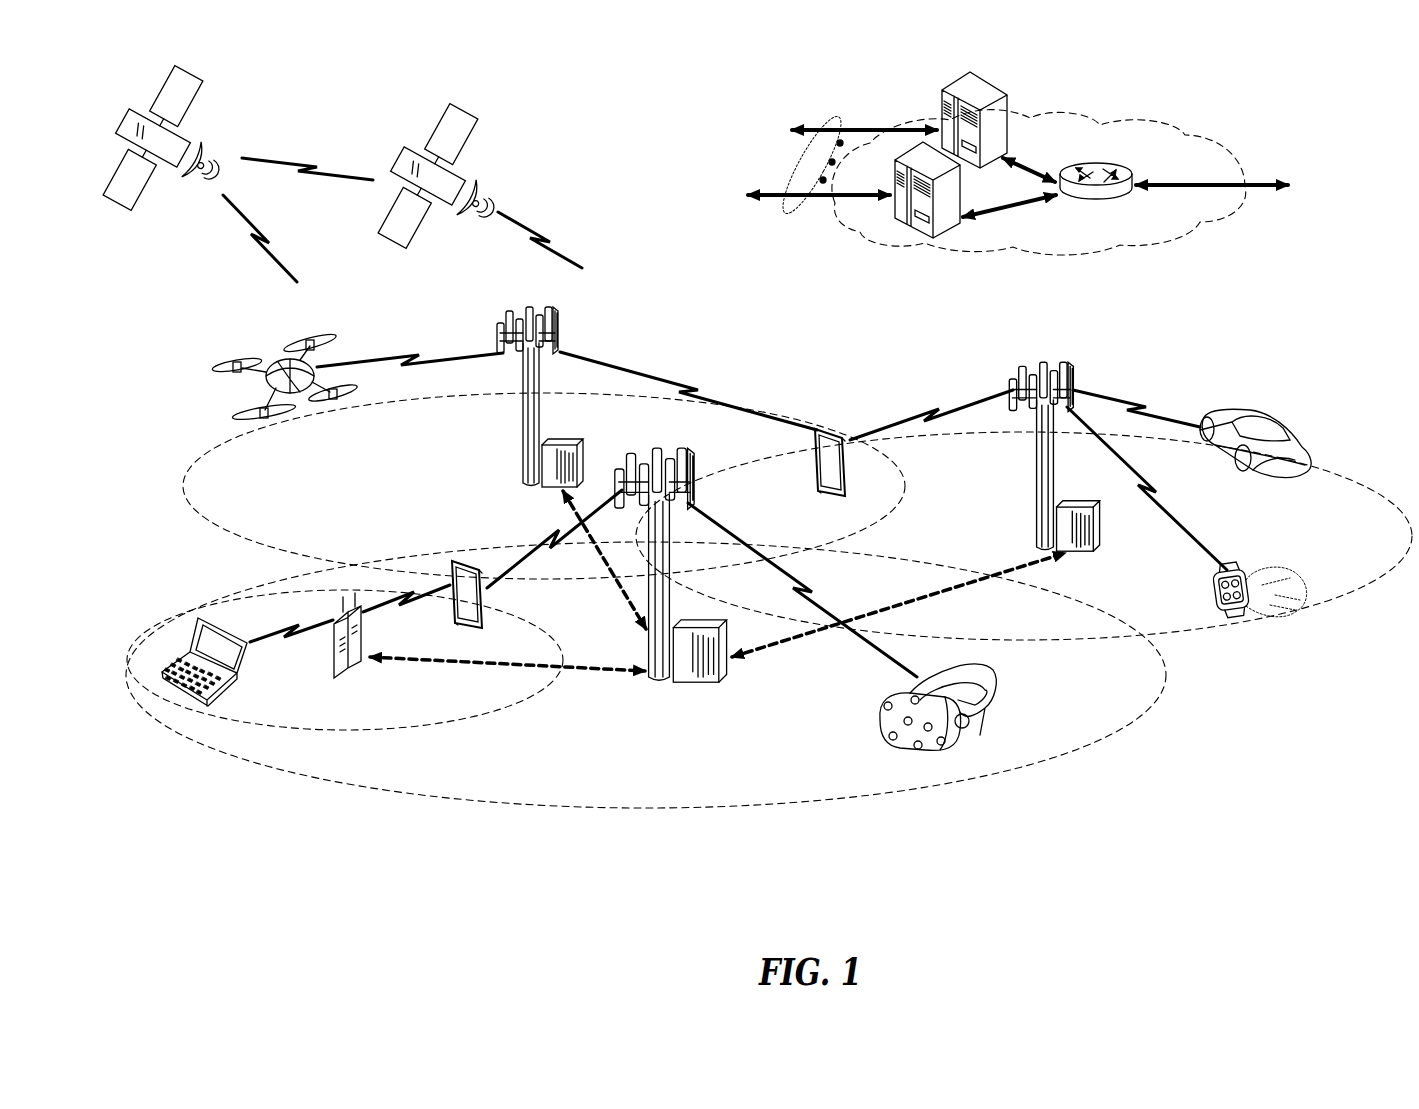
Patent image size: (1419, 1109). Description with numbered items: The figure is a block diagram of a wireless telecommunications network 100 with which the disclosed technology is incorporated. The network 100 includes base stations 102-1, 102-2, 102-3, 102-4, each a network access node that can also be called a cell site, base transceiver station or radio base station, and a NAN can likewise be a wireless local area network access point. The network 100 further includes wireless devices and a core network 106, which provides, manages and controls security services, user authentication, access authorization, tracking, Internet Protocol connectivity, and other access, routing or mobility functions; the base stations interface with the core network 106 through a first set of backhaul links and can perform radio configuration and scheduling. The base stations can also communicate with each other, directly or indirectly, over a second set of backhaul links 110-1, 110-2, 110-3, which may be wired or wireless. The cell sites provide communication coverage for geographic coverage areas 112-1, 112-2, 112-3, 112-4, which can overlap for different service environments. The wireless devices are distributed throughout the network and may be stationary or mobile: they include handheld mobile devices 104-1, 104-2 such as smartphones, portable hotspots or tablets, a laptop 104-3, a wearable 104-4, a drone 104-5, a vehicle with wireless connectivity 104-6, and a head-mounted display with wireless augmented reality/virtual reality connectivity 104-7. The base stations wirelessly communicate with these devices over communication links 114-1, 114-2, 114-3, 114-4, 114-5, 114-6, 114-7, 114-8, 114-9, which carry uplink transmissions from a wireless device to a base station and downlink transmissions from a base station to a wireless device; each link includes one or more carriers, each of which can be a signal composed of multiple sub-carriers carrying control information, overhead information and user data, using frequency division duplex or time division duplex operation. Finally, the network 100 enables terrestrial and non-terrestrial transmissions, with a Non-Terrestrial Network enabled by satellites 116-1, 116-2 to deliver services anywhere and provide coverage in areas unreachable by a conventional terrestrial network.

The wireless telecommunications network 100 is at (1362, 140).
The base station 102-1 is at (660, 680).
The base station 102-2 is at (523, 430).
The base station 102-3 is at (1036, 468).
The base station 102-4 is at (333, 665).
The handheld mobile device 104-1 is at (486, 606).
The handheld mobile device 104-2 is at (812, 463).
The laptop 104-3 is at (183, 700).
The wearable 104-4 is at (1277, 548).
The drone 104-5 is at (297, 398).
The vehicle with wireless connectivity 104-6 is at (1280, 417).
The head-mounted display 104-7 is at (977, 693).
The core network 106 is at (1130, 258).
The backhaul link 110-1 is at (405, 668).
The backhaul link 110-2 is at (963, 587).
The backhaul link 110-3 is at (622, 590).
The geographic coverage area 112-1 is at (590, 809).
The geographic coverage area 112-2 is at (467, 720).
The geographic coverage area 112-3 is at (243, 543).
The geographic coverage area 112-4 is at (1323, 462).
The communication link 114-1 is at (818, 591).
The communication link 114-2 is at (547, 534).
The communication link 114-3 is at (262, 640).
The communication link 114-4 is at (402, 604).
The communication link 114-5 is at (412, 355).
The communication link 114-6 is at (690, 388).
The communication link 114-7 is at (930, 405).
The communication link 114-8 is at (1152, 496).
The communication link 114-9 is at (1135, 403).
The satellite 116-1 is at (210, 149).
The satellite 116-2 is at (482, 186).